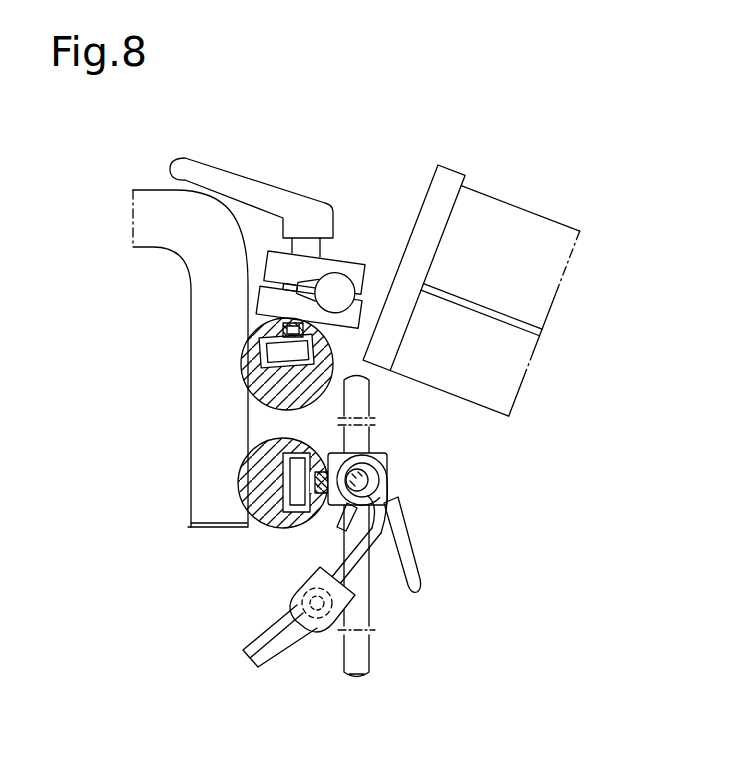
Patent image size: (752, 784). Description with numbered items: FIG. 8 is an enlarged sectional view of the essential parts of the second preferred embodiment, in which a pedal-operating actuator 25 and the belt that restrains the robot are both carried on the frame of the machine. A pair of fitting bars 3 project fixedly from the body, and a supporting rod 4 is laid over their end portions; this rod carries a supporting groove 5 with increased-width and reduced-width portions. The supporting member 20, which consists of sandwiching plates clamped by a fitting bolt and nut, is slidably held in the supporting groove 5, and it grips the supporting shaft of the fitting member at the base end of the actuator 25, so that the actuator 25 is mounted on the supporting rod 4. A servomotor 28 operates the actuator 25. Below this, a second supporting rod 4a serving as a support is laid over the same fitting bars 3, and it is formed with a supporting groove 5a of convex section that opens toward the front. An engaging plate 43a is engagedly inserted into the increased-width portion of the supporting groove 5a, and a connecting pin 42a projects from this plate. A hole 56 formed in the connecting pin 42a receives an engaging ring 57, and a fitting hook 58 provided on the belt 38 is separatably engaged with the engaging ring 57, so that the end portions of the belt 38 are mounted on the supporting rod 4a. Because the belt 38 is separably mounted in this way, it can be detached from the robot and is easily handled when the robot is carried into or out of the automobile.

The fitting bar 3 is at (182, 240).
The supporting rod 4 is at (260, 377).
The supporting rod 4a is at (265, 453).
The supporting groove 5 is at (260, 347).
The supporting groove 5a is at (280, 488).
The supporting member 20 is at (335, 244).
The actuator 25 is at (510, 378).
The servomotor 28 is at (545, 277).
The belt 38 is at (262, 628).
The connecting pin 42a is at (276, 530).
The engaging plate 43a is at (295, 470).
The hole 56 is at (352, 478).
The engaging ring 57 is at (366, 485).
The fitting hook 58 is at (378, 543).